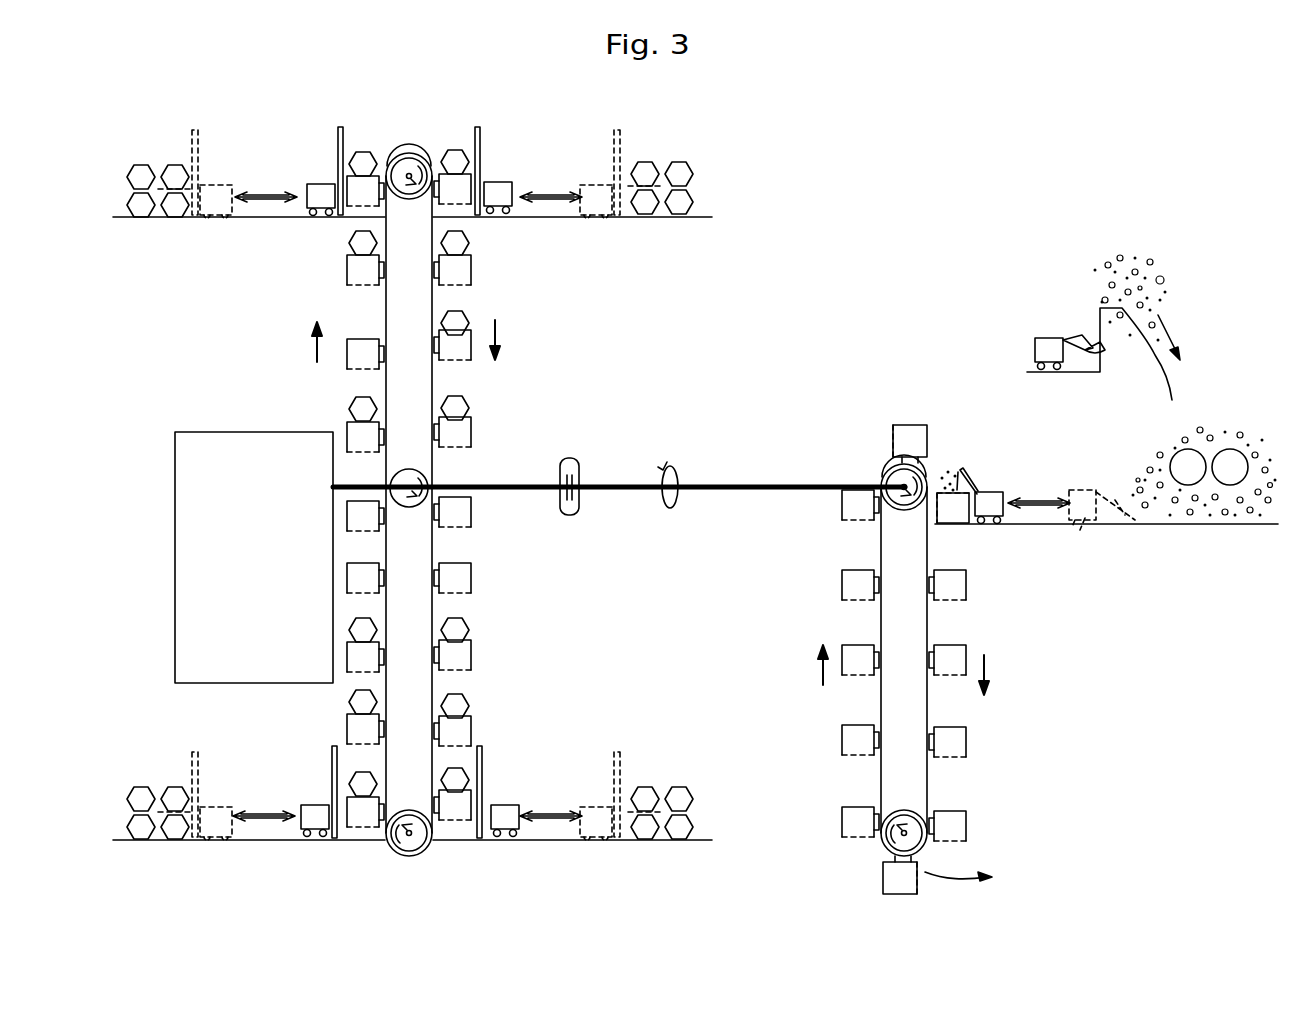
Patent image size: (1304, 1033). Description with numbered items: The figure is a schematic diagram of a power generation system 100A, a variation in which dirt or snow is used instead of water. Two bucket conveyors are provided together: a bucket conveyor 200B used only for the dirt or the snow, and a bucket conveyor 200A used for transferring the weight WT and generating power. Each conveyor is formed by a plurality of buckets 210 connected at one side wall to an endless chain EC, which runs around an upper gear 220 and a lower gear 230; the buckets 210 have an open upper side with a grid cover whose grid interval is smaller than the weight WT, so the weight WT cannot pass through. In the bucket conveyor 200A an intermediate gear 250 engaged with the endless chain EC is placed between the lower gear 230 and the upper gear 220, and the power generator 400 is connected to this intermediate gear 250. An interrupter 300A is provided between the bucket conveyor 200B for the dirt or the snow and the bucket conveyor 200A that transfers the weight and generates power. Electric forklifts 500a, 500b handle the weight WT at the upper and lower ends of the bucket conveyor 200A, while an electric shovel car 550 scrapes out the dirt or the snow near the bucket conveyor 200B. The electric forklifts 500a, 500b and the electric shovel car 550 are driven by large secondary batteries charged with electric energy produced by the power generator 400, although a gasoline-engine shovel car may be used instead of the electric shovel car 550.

The power generation system 100A is at (411, 153).
The bucket conveyor 200A is at (348, 302).
The bucket conveyor 200B is at (831, 554).
The bucket 210 is at (466, 284).
The upper gear 220 is at (402, 200).
The lower gear 230 is at (409, 808).
The intermediate gear 250 is at (409, 466).
The interrupter 300A is at (572, 458).
The power generator 400 is at (273, 567).
The electric forklift 500a is at (317, 173).
The electric forklift 500b is at (305, 795).
The electric shovel car 550 is at (1058, 333).
The endless chain EC is at (392, 162).
The weight WT is at (147, 142).